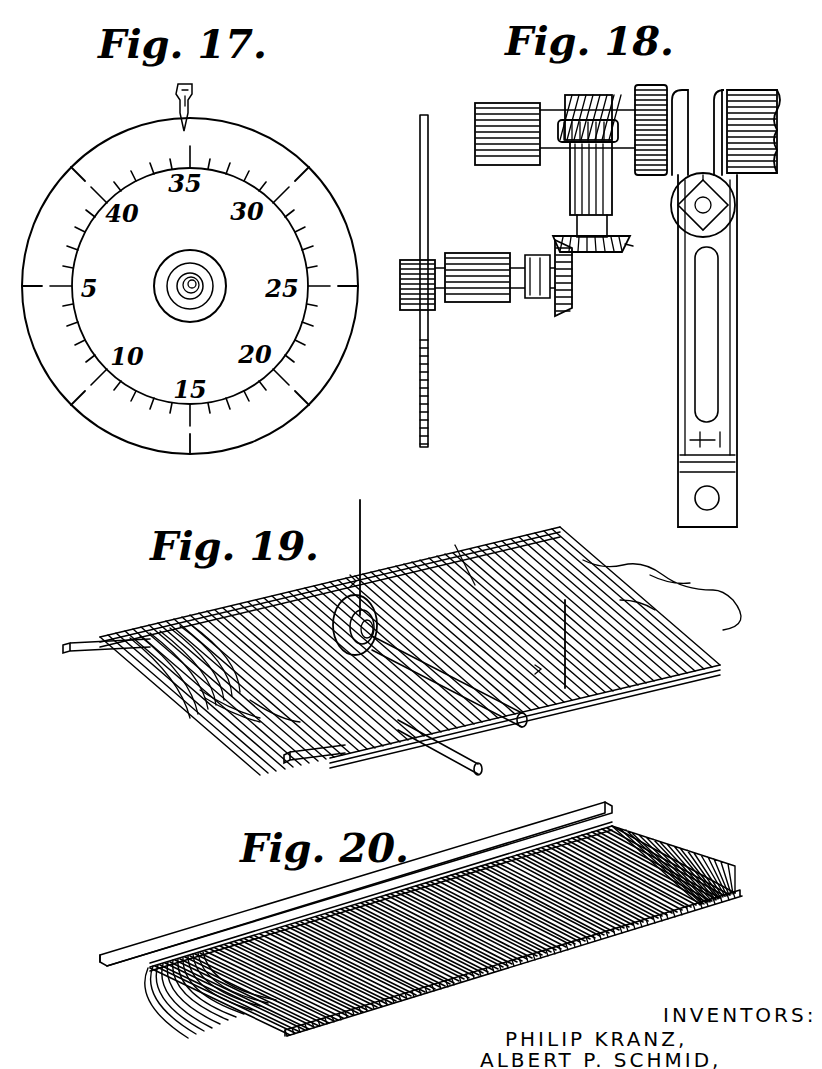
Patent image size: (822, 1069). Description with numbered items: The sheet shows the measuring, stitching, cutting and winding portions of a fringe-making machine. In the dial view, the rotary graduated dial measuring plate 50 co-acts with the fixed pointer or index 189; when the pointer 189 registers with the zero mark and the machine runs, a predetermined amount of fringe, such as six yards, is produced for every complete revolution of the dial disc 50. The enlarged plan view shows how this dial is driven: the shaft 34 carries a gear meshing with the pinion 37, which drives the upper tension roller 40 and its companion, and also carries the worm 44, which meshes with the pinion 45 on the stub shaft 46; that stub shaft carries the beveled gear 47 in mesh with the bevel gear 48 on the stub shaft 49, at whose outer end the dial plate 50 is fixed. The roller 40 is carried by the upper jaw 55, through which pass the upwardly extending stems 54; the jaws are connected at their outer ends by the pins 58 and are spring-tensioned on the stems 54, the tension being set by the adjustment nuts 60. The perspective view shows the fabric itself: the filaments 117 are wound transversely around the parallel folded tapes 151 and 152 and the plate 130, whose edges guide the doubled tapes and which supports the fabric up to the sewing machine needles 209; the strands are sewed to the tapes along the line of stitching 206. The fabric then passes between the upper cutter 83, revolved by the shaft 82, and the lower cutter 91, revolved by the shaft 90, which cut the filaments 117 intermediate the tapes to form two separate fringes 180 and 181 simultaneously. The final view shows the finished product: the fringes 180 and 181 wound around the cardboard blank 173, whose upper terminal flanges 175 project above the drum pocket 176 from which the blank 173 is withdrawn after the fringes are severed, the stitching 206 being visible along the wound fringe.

In FIG. 17, the graduated dial measuring plate 50 is at (238, 137).
In FIG. 18, the graduated dial measuring plate 50 is at (456, 361).
In FIG. 17, the fixed pointer or index 189 is at (178, 108).
In FIG. 18, the fixed pointer or index 189 is at (448, 310).
In FIG. 18, the shaft 34 is at (560, 150).
In FIG. 18, the worm 44 is at (592, 100).
In FIG. 18, the pinion 45 is at (558, 125).
In FIG. 18, the pinion 37 is at (655, 90).
In FIG. 18, the stub shaft 46 is at (575, 225).
In FIG. 18, the beveled gear 47 is at (593, 259).
In FIG. 18, the bevel gear 48 is at (567, 302).
In FIG. 18, the stub shaft 49 is at (520, 298).
In FIG. 18, the upper tension roller 40 is at (752, 178).
In FIG. 18, the upwardly extending stem 54 is at (722, 224).
In FIG. 18, the upper jaw 55 is at (687, 323).
In FIG. 18, the pin 58 is at (707, 510).
In FIG. 18, the adjustment nut 60 is at (724, 245).
In FIG. 19, the line of stitching 206 is at (170, 612).
In FIG. 20, the line of stitching 206 is at (195, 945).
In FIG. 19, the upper cutter 83 is at (330, 620).
In FIG. 19, the shaft 82 is at (527, 720).
In FIG. 19, the shaft 90 is at (475, 763).
In FIG. 19, the lower cutter 91 is at (292, 720).
In FIG. 19, the filaments 117 is at (370, 550).
In FIG. 19, the sewing machine needles 209 is at (352, 580).
In FIG. 19, the semi-circular slot or pocket 176 is at (465, 590).
In FIG. 19, the plate 130 is at (700, 623).
In FIG. 19, the tape 151 is at (92, 645).
In FIG. 19, the tape 152 is at (300, 768).
In FIG. 19, the fringe 180 is at (168, 689).
In FIG. 19, the fringe 181 is at (232, 722).
In FIG. 20, the upper terminal flange 175 is at (115, 957).
In FIG. 20, the blank 173 is at (512, 968).